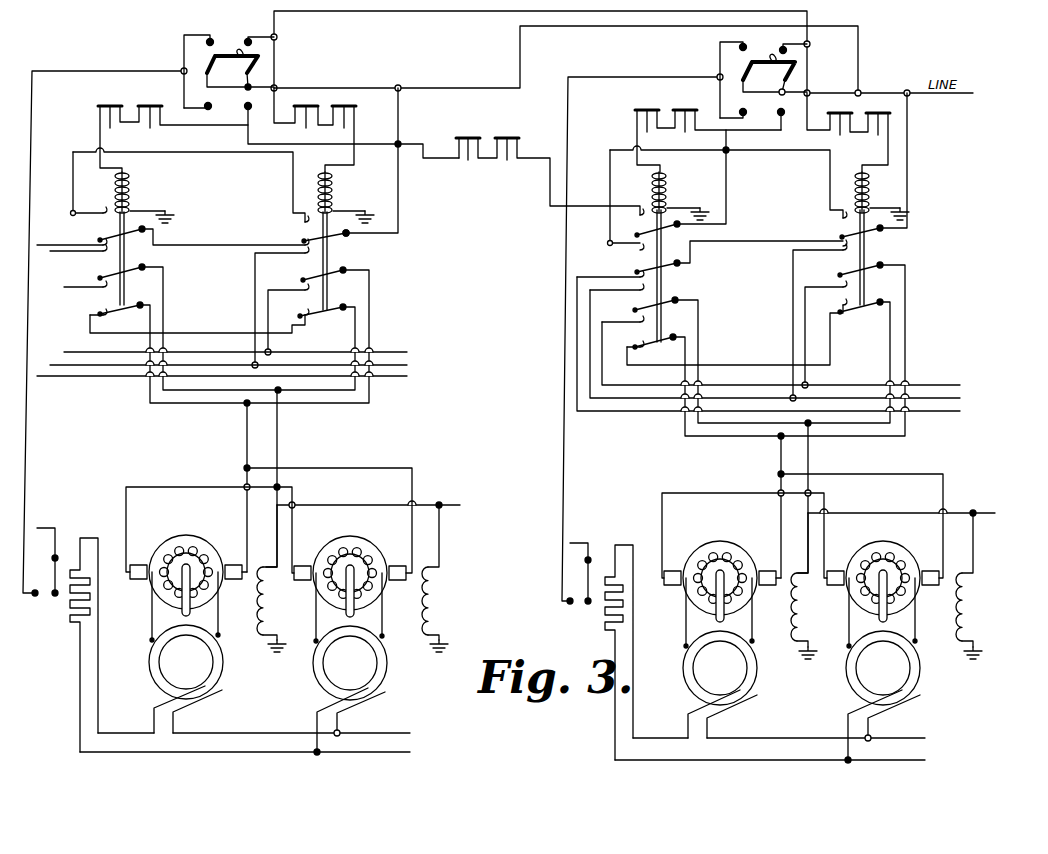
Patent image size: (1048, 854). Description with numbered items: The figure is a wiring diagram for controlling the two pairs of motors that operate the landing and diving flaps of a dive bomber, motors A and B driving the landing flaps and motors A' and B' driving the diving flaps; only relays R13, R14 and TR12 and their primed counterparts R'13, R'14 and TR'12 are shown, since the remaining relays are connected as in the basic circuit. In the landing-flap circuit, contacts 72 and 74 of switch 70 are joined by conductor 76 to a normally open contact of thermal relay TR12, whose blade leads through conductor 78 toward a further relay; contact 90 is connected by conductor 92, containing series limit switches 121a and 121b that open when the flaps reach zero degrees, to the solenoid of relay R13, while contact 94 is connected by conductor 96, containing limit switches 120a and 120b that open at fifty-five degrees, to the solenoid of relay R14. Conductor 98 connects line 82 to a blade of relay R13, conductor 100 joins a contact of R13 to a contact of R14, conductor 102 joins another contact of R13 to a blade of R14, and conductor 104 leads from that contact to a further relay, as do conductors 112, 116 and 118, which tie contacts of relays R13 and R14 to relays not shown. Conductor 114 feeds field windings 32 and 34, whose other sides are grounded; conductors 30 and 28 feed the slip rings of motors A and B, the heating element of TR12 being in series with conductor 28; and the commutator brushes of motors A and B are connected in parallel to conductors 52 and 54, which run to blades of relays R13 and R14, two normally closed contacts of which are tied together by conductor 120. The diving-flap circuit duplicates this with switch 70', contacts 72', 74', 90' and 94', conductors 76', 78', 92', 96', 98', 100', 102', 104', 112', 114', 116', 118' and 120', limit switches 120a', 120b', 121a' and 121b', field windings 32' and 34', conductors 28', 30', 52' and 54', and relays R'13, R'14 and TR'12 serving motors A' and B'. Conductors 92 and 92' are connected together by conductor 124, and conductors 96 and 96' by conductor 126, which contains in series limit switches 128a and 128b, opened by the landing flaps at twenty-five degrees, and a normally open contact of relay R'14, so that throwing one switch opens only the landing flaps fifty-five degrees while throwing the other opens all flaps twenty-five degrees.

The conductor 28 is at (268, 760).
The conductor 30 is at (277, 731).
The field winding 32 is at (272, 578).
The field winding 34 is at (439, 578).
The conductor 52 is at (248, 417).
The conductor 54 is at (242, 421).
The switch 70 is at (240, 64).
The contact 72 is at (202, 62).
The contact 74 is at (198, 96).
The conductor 76 is at (105, 326).
The conductor 78 is at (43, 547).
The conductor 82 is at (337, 86).
The contact 90 is at (256, 31).
The conductor 92 is at (355, 139).
The contact 94 is at (323, 125).
The conductor 96 is at (204, 123).
The conductor 98 is at (383, 162).
The conductor 100 is at (191, 185).
The conductor 102 is at (225, 237).
The conductor 104 is at (67, 184).
The conductor 112 is at (246, 385).
The conductor 114 is at (392, 498).
The conductor 116 is at (259, 344).
The conductor 118 is at (253, 370).
The conductor 120 is at (199, 321).
The limit switch 120a is at (100, 128).
The limit switch 120b is at (171, 106).
The limit switch 121a is at (302, 112).
The limit switch 121b is at (335, 112).
The conductor 124 is at (452, 14).
The conductor 126 is at (436, 161).
The limit switch 128a is at (476, 165).
The limit switch 128b is at (520, 148).
The relay R13 is at (346, 241).
The relay R14 is at (144, 238).
The thermal relay TR12 is at (89, 635).
The motor A is at (210, 610).
The motor B is at (329, 610).
The conductor 28' is at (795, 769).
The conductor 30' is at (804, 735).
The field winding 32' is at (809, 586).
The field winding 34' is at (975, 586).
The conductor 52' is at (782, 436).
The conductor 54' is at (796, 421).
The switch 70' is at (775, 74).
The contact 72' is at (733, 80).
The contact 74' is at (733, 106).
The conductor 76' is at (642, 330).
The conductor 78' is at (578, 557).
The contact 90' is at (789, 41).
The conductor 92' is at (879, 148).
The contact 94' is at (770, 113).
The conductor 96' is at (738, 129).
The conductor 98' is at (911, 162).
The conductor 100' is at (728, 182).
The conductor 102' is at (762, 245).
The conductor 104' is at (607, 200).
The conductor 112' is at (793, 355).
The conductor 114' is at (916, 510).
The conductor 116' is at (806, 358).
The conductor 118' is at (800, 352).
The conductor 120' is at (737, 332).
The limit switch 120a' is at (633, 130).
The limit switch 120b' is at (701, 119).
The limit switch 121a' is at (836, 120).
The limit switch 121b' is at (868, 125).
The relay R'13 is at (882, 238).
The relay R'14 is at (680, 257).
The thermal relay TR'12 is at (625, 642).
The motor A' is at (744, 615).
The motor B' is at (862, 617).